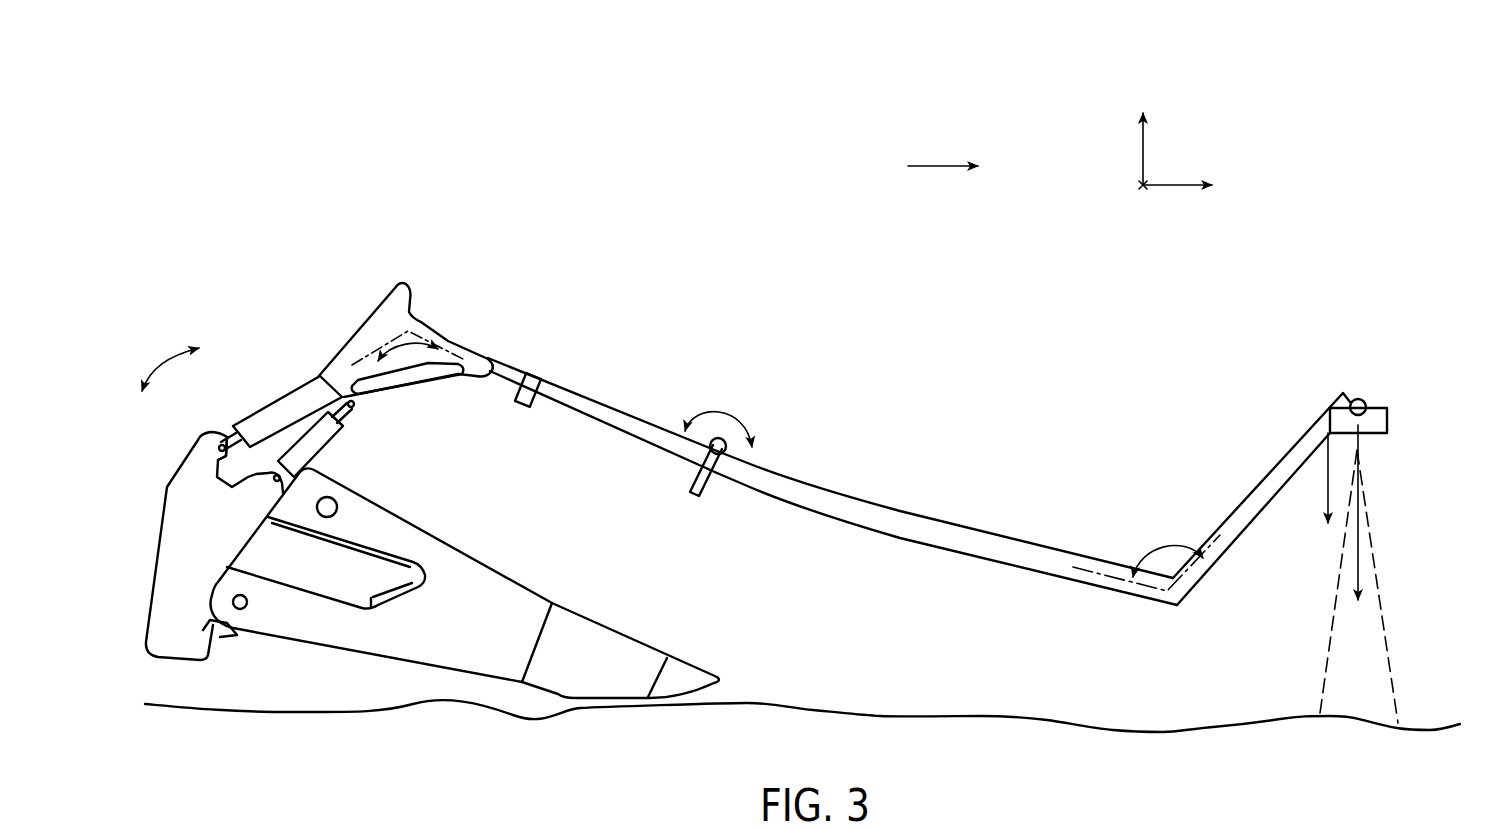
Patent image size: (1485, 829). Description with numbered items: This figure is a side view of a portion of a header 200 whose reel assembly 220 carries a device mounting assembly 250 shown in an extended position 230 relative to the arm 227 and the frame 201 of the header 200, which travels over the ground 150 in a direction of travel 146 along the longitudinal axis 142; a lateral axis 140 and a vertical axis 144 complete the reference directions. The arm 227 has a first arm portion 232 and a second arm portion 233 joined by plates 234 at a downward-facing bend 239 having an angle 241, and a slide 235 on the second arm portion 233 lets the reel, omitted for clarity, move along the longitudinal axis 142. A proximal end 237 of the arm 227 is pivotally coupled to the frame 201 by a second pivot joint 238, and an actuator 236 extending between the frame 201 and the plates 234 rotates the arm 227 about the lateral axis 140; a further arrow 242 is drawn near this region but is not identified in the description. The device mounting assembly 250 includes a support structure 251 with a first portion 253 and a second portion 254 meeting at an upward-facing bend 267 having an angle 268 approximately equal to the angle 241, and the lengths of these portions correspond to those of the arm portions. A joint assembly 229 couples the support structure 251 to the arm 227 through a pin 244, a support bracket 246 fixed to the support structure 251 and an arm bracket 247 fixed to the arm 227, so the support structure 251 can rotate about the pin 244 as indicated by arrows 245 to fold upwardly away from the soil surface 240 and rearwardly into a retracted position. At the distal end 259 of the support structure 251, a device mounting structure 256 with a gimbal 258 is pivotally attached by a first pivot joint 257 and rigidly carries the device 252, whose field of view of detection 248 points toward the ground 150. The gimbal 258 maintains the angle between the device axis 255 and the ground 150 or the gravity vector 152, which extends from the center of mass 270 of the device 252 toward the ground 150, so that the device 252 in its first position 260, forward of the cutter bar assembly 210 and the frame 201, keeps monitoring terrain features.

The lateral axis 140 is at (1152, 162).
The longitudinal axis 142 is at (1172, 187).
The vertical axis 144 is at (1143, 157).
The direction of travel 146 is at (935, 166).
The ground 150 is at (921, 717).
The gravity vector 152 is at (1357, 545).
The header 200 is at (711, 302).
The frame 201 is at (153, 550).
The cutter bar assembly 210 is at (702, 645).
The reel assembly 220 is at (567, 528).
The arm 227 is at (505, 310).
The joint assembly 229 is at (754, 397).
The extended position 230 is at (750, 560).
The first arm portion 232 is at (287, 387).
The second arm portion 233 is at (602, 392).
The plates 234 is at (395, 303).
The slide 235 is at (538, 373).
The actuator 236 is at (324, 443).
The end of the arm 237 is at (226, 434).
The second pivot joint 238 is at (197, 424).
The bend 239 is at (390, 378).
The soil surface 240 is at (980, 715).
The angle 241 is at (417, 362).
The tilt direction 242 is at (167, 366).
The pin 244 is at (728, 450).
The arrows 245 is at (722, 410).
The support bracket 246 is at (694, 498).
The arm bracket 247 is at (692, 488).
The field of view of detection 248 is at (1378, 592).
The device mounting assembly 250 is at (1186, 492).
The support structure 251 is at (1040, 528).
The device 252 is at (1387, 413).
The first portion 253 is at (948, 550).
The second portion 254 is at (1205, 578).
The axis 255 is at (1327, 485).
The device mounting structure 256 is at (1393, 357).
The first pivot joint 257 is at (1372, 366).
The gimbal 258 is at (1364, 398).
The end of the support structure 259 is at (1357, 398).
The first position 260 is at (1305, 385).
The bend 267 is at (1202, 514).
The angle 268 is at (1162, 547).
The center of mass 270 is at (1360, 425).